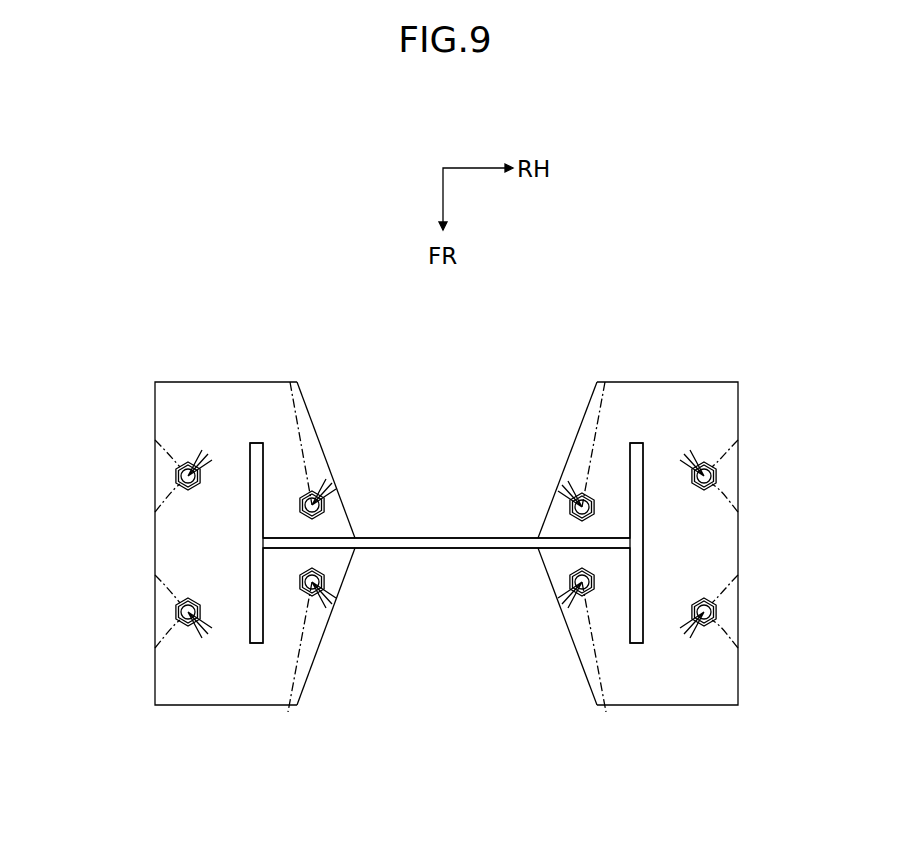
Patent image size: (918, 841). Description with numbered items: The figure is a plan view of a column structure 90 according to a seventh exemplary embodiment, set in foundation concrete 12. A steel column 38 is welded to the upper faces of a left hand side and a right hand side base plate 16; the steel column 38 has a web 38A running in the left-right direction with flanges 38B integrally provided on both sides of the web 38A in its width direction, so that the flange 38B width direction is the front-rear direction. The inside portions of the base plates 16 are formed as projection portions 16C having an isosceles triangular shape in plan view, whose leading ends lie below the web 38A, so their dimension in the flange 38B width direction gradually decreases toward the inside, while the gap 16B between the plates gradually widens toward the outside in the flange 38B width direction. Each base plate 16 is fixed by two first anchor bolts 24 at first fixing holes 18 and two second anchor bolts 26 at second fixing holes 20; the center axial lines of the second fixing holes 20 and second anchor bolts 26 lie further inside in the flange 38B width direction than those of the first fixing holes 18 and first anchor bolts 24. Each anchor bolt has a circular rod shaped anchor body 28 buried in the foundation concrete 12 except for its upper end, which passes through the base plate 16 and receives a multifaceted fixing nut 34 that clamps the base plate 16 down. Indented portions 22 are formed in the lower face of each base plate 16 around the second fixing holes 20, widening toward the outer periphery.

The column structure 90 is at (148, 238).
The foundation concrete 12 is at (705, 240).
The base plate 16 is at (213, 382).
The gap 16B is at (585, 683).
The projection portion 16C is at (298, 382).
The first fixing hole 18 is at (175, 475).
The second fixing hole 20 is at (290, 382).
The indented portion 22 is at (165, 490).
The first anchor bolt 24 is at (182, 467).
The second anchor bolt 26 is at (326, 480).
The anchor body 28 is at (200, 474).
The fixing nut 34 is at (200, 488).
The steel column 38 is at (447, 538).
The web 38A is at (450, 548).
The flange 38B is at (265, 563).